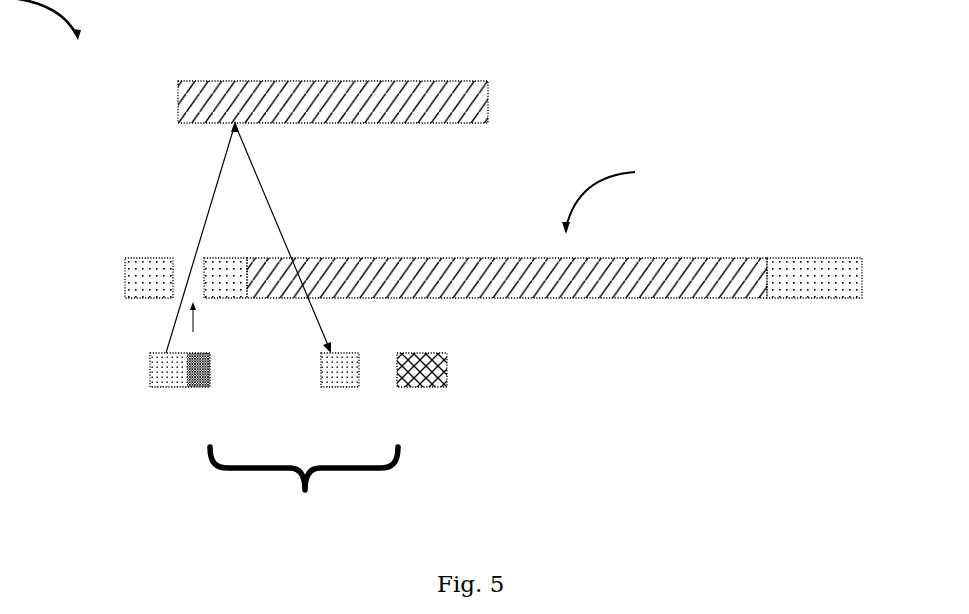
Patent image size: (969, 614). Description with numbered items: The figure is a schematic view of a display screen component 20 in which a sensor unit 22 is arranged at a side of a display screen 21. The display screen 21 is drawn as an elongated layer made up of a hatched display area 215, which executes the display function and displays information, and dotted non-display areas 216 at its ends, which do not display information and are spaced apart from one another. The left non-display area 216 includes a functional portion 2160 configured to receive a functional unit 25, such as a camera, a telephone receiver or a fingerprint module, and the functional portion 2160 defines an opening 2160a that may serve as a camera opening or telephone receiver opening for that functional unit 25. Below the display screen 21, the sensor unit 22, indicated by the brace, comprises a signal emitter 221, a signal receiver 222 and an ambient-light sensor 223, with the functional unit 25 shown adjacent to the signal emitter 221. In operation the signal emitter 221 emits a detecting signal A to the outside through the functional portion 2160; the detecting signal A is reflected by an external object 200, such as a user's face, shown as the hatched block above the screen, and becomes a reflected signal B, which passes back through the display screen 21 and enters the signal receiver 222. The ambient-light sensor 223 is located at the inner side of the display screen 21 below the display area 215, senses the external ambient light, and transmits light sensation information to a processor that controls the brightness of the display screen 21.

The display screen component 20 is at (57, 36).
The external object 200 is at (488, 105).
The display screen 21 is at (482, 246).
The display area 215 is at (703, 258).
The non-display area 216 is at (145, 258).
The functional portion 2160 is at (170, 258).
The opening 2160a is at (225, 317).
The sensor unit 22 is at (298, 419).
The signal emitter 221 is at (221, 378).
The signal receiver 222 is at (340, 388).
The ambient-light sensor 223 is at (425, 388).
The functional unit 25 is at (208, 353).
The detecting signal A is at (218, 172).
The reflected signal B is at (275, 223).